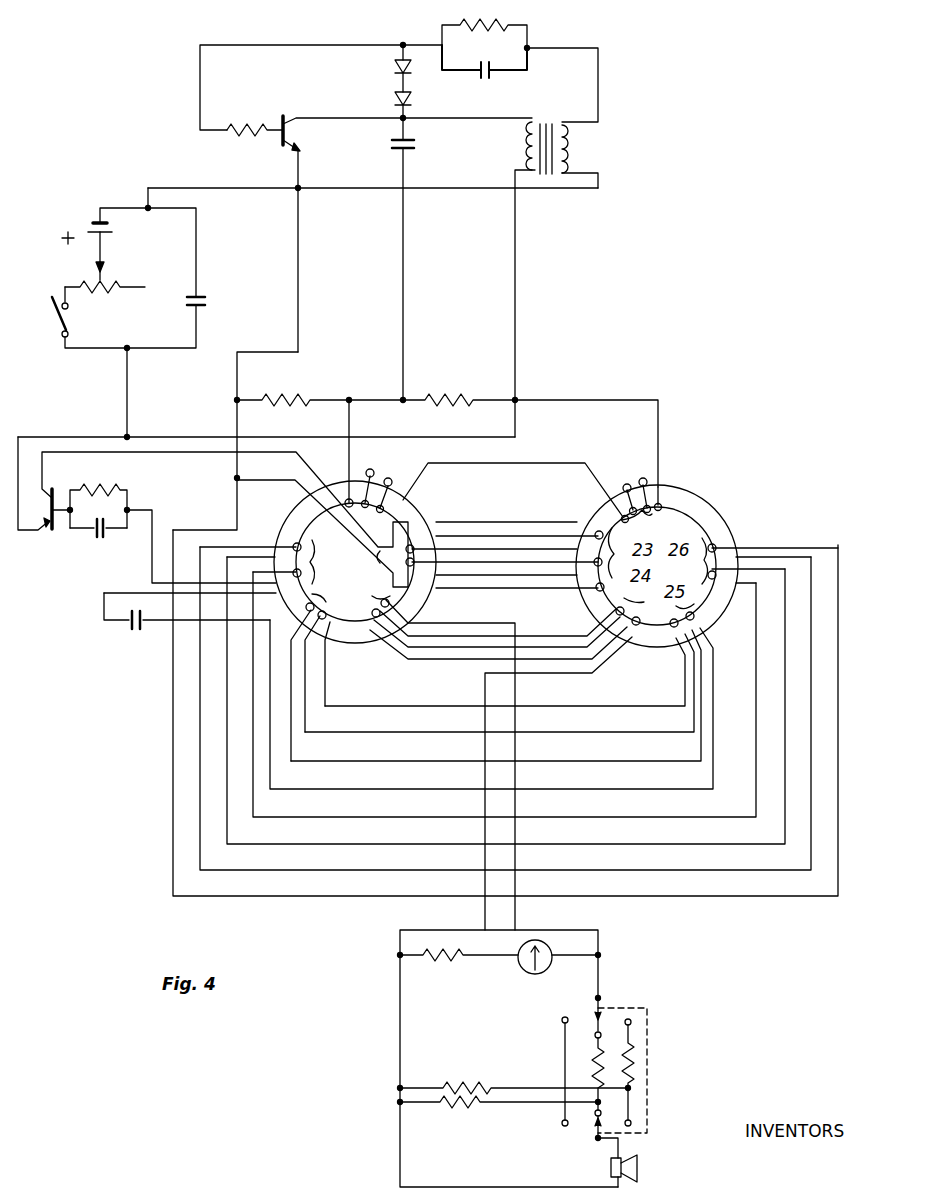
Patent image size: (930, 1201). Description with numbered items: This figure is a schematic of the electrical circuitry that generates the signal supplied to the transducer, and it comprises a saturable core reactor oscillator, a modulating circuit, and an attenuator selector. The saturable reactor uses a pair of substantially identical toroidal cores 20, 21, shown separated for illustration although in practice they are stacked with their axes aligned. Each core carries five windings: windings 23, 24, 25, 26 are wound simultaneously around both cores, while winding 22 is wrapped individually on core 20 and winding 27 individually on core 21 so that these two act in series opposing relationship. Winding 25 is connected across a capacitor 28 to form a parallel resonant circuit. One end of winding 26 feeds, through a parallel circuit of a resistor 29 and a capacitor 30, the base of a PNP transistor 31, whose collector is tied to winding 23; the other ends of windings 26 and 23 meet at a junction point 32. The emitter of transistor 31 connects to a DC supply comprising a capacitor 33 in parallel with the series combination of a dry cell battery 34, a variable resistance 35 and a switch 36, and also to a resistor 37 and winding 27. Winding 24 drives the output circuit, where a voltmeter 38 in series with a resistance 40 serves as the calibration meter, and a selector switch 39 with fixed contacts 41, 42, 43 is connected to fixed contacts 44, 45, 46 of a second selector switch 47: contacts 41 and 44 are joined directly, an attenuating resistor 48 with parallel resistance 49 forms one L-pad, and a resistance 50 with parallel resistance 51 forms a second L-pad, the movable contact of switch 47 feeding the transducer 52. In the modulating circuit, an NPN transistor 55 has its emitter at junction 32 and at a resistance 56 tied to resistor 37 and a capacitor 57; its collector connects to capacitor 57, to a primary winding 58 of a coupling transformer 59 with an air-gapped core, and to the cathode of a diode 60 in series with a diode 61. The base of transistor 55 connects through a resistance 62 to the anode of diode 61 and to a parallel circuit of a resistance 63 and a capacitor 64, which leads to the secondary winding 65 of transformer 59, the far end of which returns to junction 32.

The toroidal core 20 is at (416, 499).
The toroidal core 21 is at (700, 490).
The winding 22 is at (372, 470).
The winding 23 is at (372, 536).
The winding 24 is at (370, 599).
The winding 25 is at (327, 590).
The winding 26 is at (313, 562).
The winding 27 is at (640, 526).
The capacitor 28 is at (128, 628).
The resistor 29 is at (106, 468).
The capacitor 30 is at (103, 536).
The PNP transistor 31 is at (60, 530).
The junction point 32 is at (300, 190).
The capacitor 33 is at (205, 296).
The dry cell battery 34 is at (110, 230).
The variable resistance 35 is at (105, 290).
The switch 36 is at (70, 325).
The resistor 37 is at (448, 392).
The voltmeter 38 is at (520, 974).
The selector switch 39 is at (616, 990).
The resistance 40 is at (438, 962).
The fixed contact 41 is at (562, 1016).
The fixed contact 42 is at (596, 1038).
The fixed contact 43 is at (631, 1022).
The fixed contact 44 is at (560, 1123).
The fixed contact 45 is at (590, 1120).
The fixed contact 46 is at (632, 1122).
The selector switch 47 is at (586, 1144).
The attenuating resistor 48 is at (592, 1067).
The resistance 49 is at (446, 1110).
The resistance 50 is at (635, 1057).
The resistance 51 is at (468, 1080).
The transducer 52 is at (628, 1154).
The NPN transistor 55 is at (280, 116).
The resistance 56 is at (283, 390).
The capacitor 57 is at (410, 148).
The primary winding 58 is at (522, 148).
The coupling transformer 59 is at (550, 110).
The semiconductor diode 60 is at (394, 102).
The semiconductor diode 61 is at (395, 72).
The resistance 62 is at (245, 140).
The resistance 63 is at (486, 24).
The capacitor 64 is at (494, 73).
The secondary winding 65 is at (578, 146).